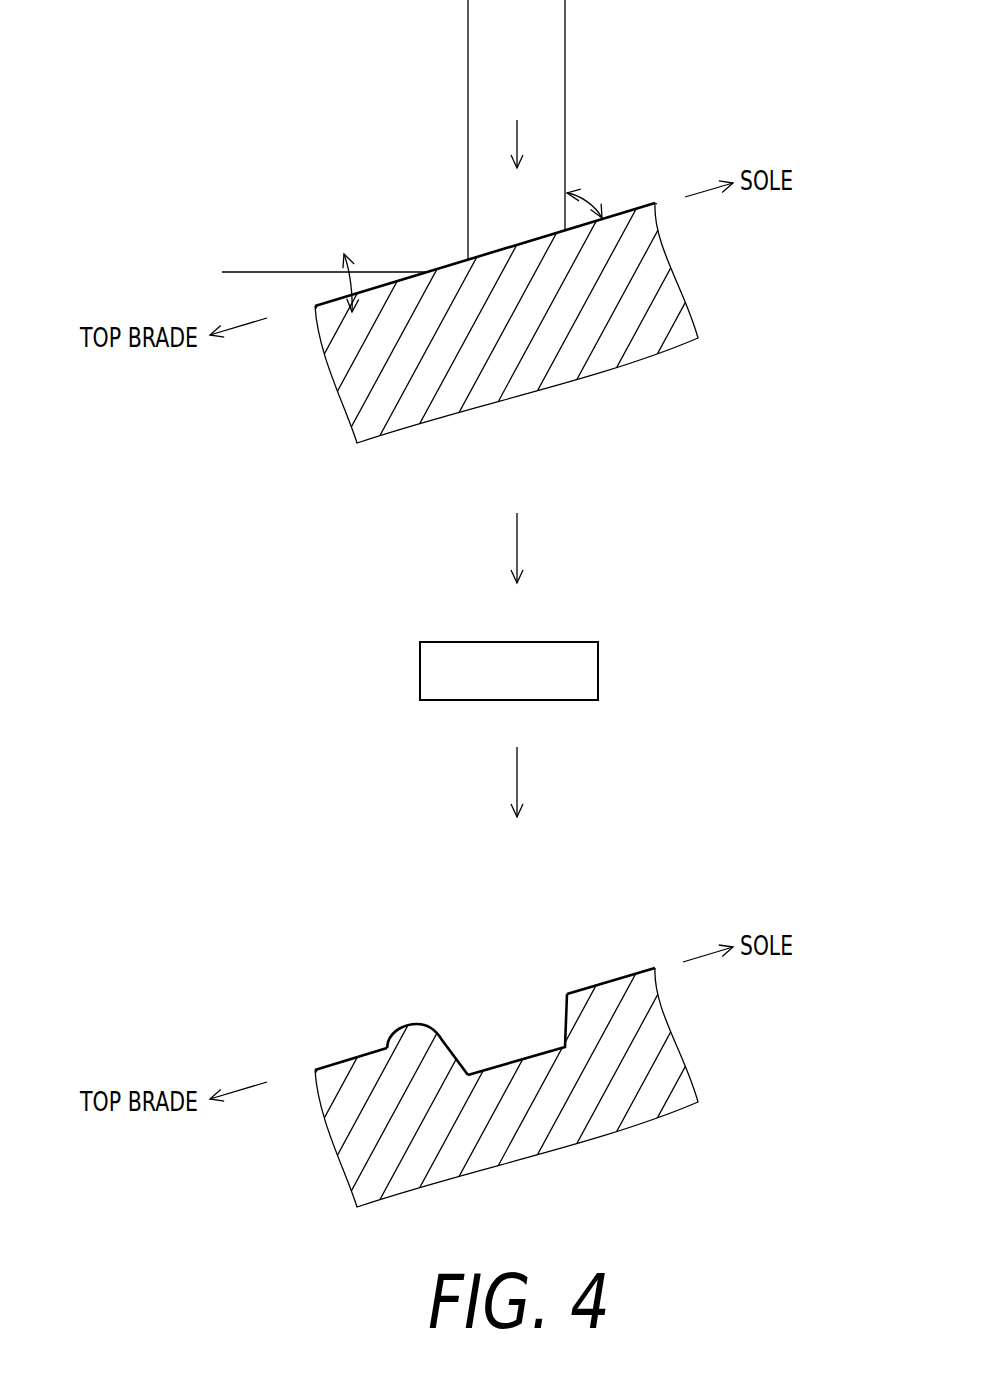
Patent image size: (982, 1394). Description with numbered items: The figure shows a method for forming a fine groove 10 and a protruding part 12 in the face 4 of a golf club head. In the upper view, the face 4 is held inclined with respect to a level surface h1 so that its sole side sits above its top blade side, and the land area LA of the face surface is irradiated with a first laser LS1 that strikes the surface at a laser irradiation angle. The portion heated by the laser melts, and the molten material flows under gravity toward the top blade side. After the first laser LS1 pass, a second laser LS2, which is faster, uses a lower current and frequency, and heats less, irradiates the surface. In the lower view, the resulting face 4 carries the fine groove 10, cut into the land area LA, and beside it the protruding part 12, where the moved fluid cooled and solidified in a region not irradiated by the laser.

The face 4 is at (373, 192).
The fine groove 10 is at (497, 1002).
The protruding part 12 is at (413, 1027).
The first laser LS1 is at (548, 36).
The second laser LS2 is at (509, 671).
The land area LA is at (642, 200).
The level surface h1 is at (253, 272).